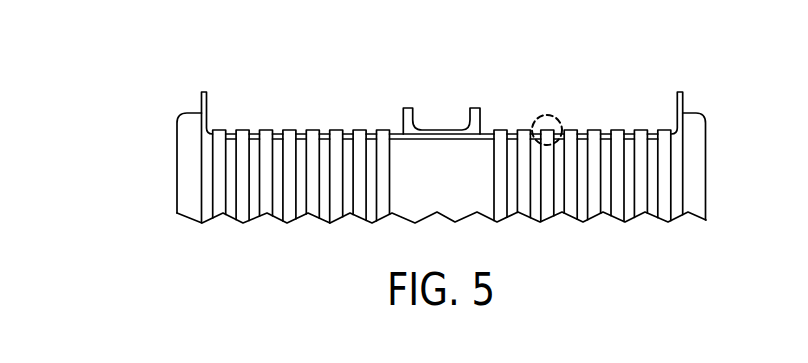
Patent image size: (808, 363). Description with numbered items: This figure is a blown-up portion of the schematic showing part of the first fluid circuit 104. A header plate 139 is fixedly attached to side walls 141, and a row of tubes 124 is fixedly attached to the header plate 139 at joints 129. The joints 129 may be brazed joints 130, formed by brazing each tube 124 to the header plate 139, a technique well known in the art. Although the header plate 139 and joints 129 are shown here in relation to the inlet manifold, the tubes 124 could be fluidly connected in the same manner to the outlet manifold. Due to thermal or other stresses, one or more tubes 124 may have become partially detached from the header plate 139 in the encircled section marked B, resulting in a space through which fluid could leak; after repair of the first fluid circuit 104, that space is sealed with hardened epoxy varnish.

The first fluid circuit 104 is at (267, 129).
The tube 124 is at (673, 160).
The joint 129 is at (525, 110).
The brazed joint 130 is at (552, 117).
The header plate 139 is at (683, 106).
The side wall 141 is at (177, 166).
The encircled section B is at (563, 118).